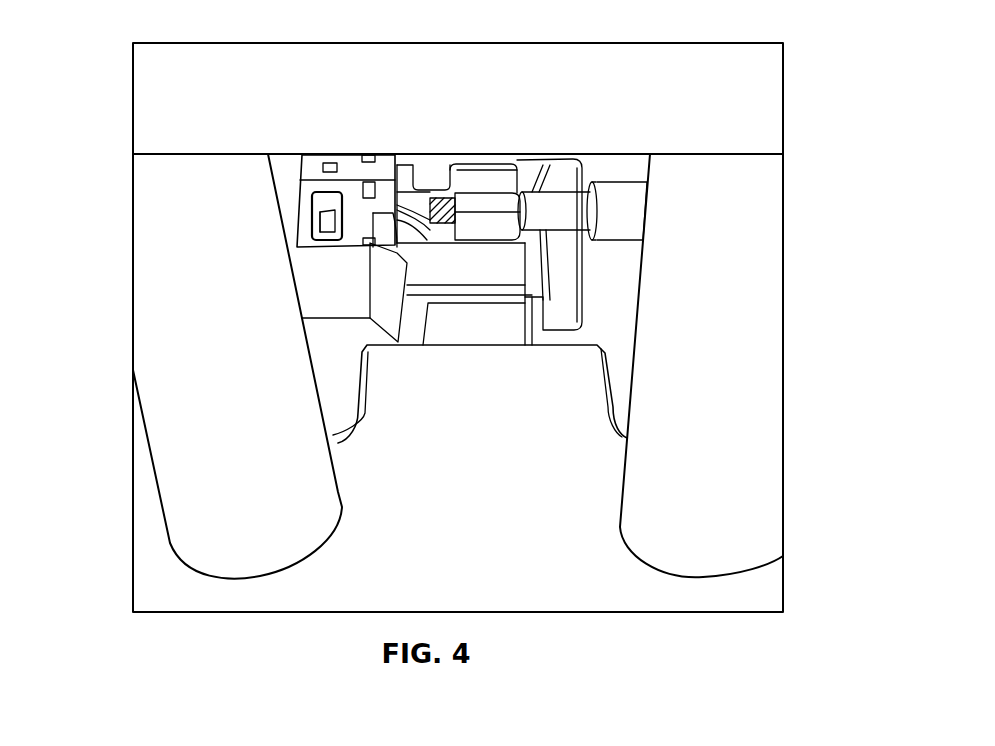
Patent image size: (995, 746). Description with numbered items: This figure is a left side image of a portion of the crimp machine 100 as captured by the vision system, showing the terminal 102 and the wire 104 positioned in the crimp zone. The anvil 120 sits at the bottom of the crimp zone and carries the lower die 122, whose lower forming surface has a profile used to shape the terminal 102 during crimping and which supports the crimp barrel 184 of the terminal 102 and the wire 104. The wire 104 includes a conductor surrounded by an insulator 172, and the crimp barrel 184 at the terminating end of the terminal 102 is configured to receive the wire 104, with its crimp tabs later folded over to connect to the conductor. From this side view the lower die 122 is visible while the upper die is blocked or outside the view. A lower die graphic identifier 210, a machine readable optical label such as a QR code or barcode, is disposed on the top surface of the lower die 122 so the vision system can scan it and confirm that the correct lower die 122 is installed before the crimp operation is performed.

The crimp machine 100 is at (106, 54).
The terminal 102 is at (320, 199).
The wire 104 is at (622, 212).
The anvil 120 is at (412, 323).
The lower die 122 is at (497, 257).
The insulator 172 is at (558, 205).
The crimp barrel 184 is at (477, 205).
The lower die graphic identifier 210 is at (483, 325).